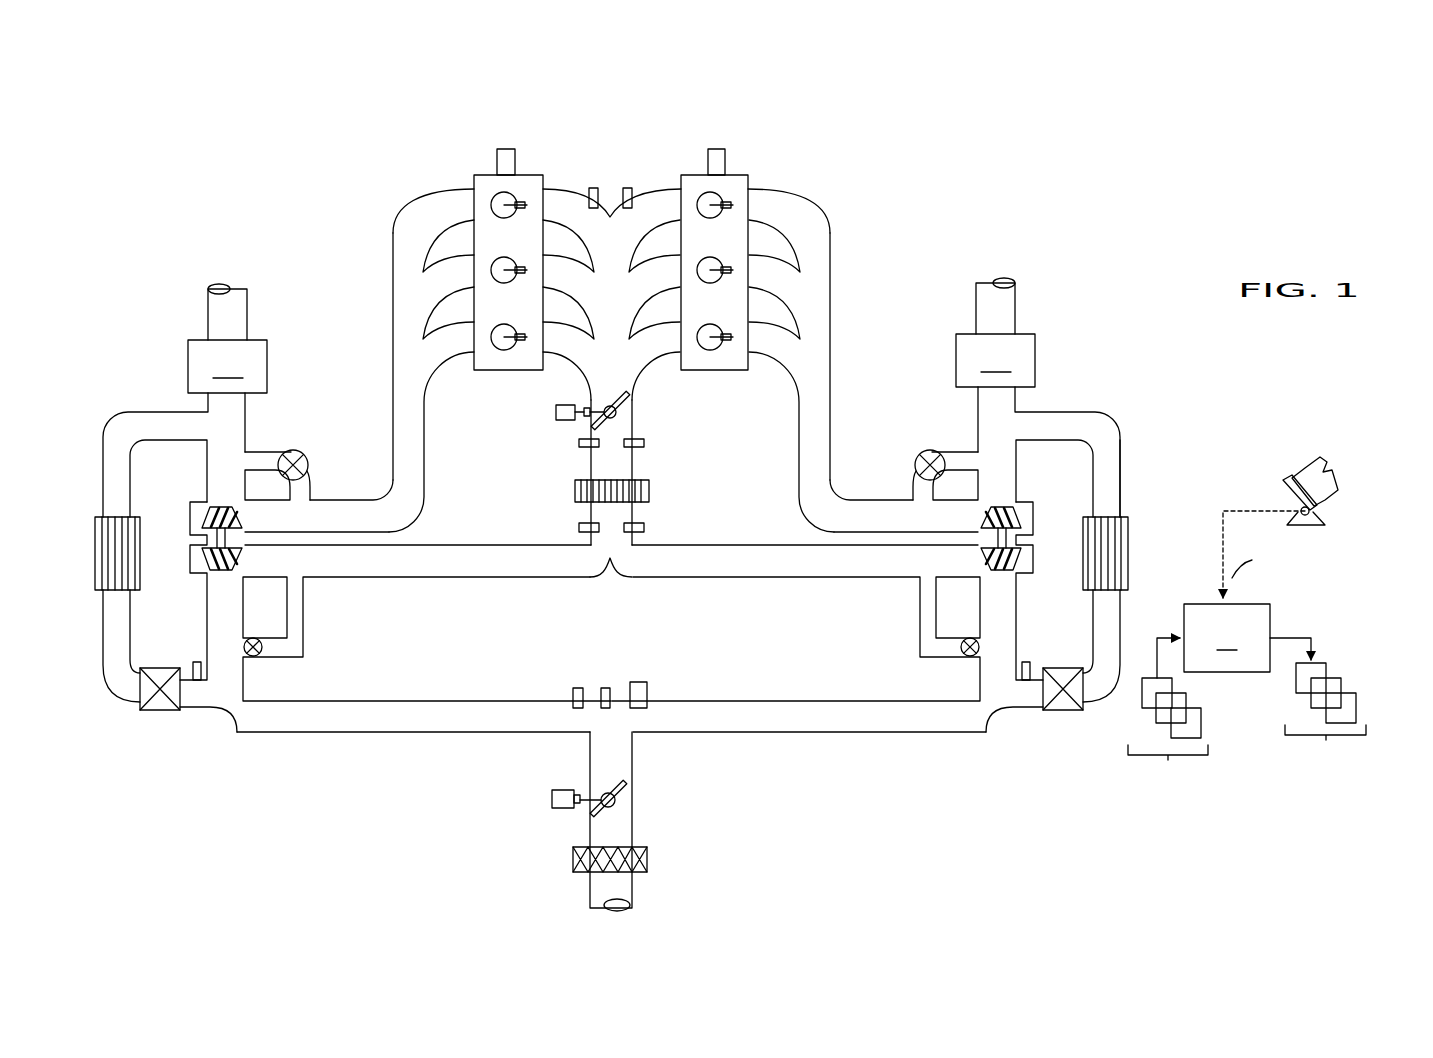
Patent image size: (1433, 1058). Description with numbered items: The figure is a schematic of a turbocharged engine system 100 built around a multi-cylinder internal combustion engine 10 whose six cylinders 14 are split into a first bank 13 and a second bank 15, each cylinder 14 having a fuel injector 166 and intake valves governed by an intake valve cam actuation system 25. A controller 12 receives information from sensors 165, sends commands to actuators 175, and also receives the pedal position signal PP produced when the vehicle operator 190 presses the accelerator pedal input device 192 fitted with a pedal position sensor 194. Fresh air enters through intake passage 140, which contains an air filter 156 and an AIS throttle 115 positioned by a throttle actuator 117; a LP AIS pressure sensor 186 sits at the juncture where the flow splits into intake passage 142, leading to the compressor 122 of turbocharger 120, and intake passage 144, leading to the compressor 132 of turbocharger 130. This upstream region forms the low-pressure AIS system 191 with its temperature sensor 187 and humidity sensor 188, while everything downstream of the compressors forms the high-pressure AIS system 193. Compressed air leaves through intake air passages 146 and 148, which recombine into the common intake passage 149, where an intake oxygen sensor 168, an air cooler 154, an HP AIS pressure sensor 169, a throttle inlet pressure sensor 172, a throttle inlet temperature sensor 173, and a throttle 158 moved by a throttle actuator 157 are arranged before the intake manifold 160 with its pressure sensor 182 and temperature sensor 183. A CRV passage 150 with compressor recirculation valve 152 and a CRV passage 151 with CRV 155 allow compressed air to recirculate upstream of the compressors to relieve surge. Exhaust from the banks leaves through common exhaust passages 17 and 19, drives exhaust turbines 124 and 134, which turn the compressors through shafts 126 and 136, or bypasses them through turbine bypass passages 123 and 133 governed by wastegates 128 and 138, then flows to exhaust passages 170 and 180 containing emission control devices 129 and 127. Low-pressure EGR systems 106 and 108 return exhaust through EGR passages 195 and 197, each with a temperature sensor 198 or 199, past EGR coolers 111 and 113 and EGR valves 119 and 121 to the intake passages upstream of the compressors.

The internal combustion engine 10 is at (970, 180).
The controller 12 is at (1244, 591).
The first bank of cylinders 13 is at (738, 176).
The cylinder 14 is at (715, 260).
The second bank of cylinders 15 is at (476, 176).
The common exhaust passage 17 is at (831, 438).
The common exhaust passage 19 is at (392, 434).
The intake valve cam actuation system 25 is at (508, 150).
The turbocharged engine system 100 is at (258, 228).
The low-pressure EGR system 106 is at (150, 395).
The low-pressure EGR system 108 is at (1108, 388).
The EGR cooler 111 is at (143, 526).
The EGR cooler 113 is at (1130, 550).
The AIS throttle 115 is at (608, 793).
The throttle actuator 117 is at (558, 790).
The EGR valve 119 is at (162, 711).
The turbocharger 120 is at (995, 492).
The EGR valve 121 is at (1060, 711).
The compressor 122 is at (1018, 575).
The turbine bypass passage 123 is at (958, 453).
The exhaust turbine 124 is at (1012, 508).
The shaft 126 is at (1018, 552).
The emission control device 127 is at (227, 366).
The wastegate 128 is at (919, 457).
The emission control device 129 is at (995, 360).
The turbocharger 130 is at (228, 492).
The compressor 132 is at (195, 575).
The turbine bypass passage 133 is at (265, 452).
The exhaust turbine 134 is at (212, 508).
The shaft 136 is at (205, 552).
The wastegate 138 is at (304, 454).
The intake passage 140 is at (632, 898).
The intake passage 142 is at (897, 726).
The intake passage 144 is at (347, 726).
The intake air passage 146 is at (898, 568).
The intake air passage 148 is at (344, 568).
The common intake passage 149 is at (614, 452).
The CRV passage 150 is at (304, 640).
The CRV passage 151 is at (920, 633).
The compressor recirculation valve 152 is at (258, 655).
The air cooler 154 is at (650, 494).
The compressor recirculation valve 155 is at (965, 655).
The air filter 156 is at (648, 855).
The throttle actuator 157 is at (559, 405).
The throttle 158 is at (610, 405).
The intake manifold 160 is at (611, 158).
The sensors 165 is at (1167, 725).
The fuel injector 166 is at (733, 272).
The intake oxygen sensor 168 is at (645, 530).
The HP AIS pressure sensor 169 is at (578, 530).
The exhaust passage 170 is at (976, 330).
The throttle inlet pressure sensor 172 is at (578, 449).
The throttle inlet temperature sensor 173 is at (644, 449).
The actuators 175 is at (1328, 714).
The exhaust passage 180 is at (247, 338).
The intake manifold pressure sensor 182 is at (593, 187).
The intake manifold temperature sensor 183 is at (627, 187).
The LP AIS pressure sensor 186 is at (576, 688).
The temperature sensor 187 is at (604, 687).
The humidity sensor 188 is at (641, 681).
The vehicle operator 190 is at (1337, 476).
The low-pressure AIS system 191 is at (748, 676).
The high-pressure AIS system 193 is at (738, 596).
The input device 192 is at (1290, 490).
The pedal position sensor 194 is at (1318, 508).
The EGR passage 195 is at (105, 695).
The EGR passage 197 is at (1121, 460).
The temperature sensor 198 is at (193, 660).
The temperature sensor 199 is at (1030, 660).